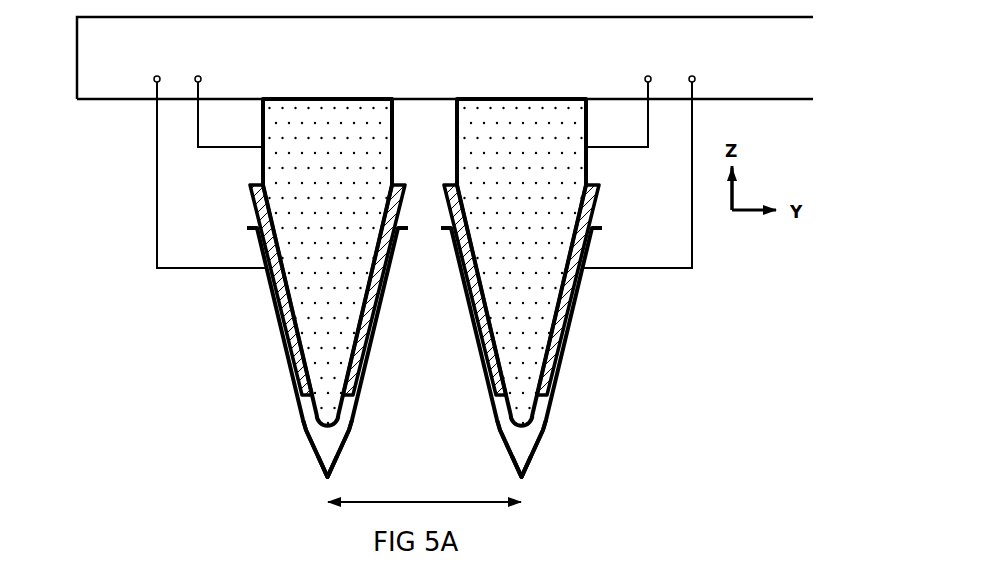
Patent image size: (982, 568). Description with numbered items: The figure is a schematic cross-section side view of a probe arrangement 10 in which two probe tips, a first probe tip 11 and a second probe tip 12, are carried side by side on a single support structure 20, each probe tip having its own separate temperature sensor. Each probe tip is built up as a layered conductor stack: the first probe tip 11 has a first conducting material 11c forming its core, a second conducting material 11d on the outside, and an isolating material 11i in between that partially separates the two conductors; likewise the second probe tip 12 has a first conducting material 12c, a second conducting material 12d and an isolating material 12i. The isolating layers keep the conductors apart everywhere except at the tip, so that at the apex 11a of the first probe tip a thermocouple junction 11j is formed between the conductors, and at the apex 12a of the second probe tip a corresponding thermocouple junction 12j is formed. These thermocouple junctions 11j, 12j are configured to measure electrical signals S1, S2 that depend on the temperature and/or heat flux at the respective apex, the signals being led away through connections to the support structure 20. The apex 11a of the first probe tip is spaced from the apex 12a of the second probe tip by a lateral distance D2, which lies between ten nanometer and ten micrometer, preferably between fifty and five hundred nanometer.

The probe assembly 10 is at (84, 196).
The support structure 20 is at (460, 67).
The electrical signal S1 is at (210, 162).
The electrical signal S2 is at (638, 162).
The first probe tip 11 is at (238, 299).
The first conducting material 11c is at (325, 377).
The isolating material 11i is at (295, 337).
The second conducting material 11d is at (273, 297).
The thermocouple junction 11j is at (276, 415).
The apex 11a is at (306, 480).
The second probe tip 12 is at (605, 299).
The first conducting material 12c is at (524, 377).
The isolating material 12i is at (554, 337).
The second conducting material 12d is at (577, 297).
The thermocouple junction 12j is at (573, 415).
The apex 12a is at (542, 480).
The lateral distance D2 is at (424, 489).